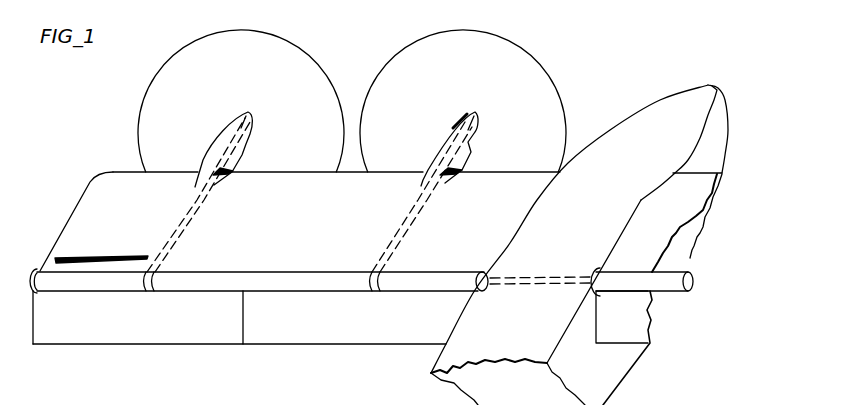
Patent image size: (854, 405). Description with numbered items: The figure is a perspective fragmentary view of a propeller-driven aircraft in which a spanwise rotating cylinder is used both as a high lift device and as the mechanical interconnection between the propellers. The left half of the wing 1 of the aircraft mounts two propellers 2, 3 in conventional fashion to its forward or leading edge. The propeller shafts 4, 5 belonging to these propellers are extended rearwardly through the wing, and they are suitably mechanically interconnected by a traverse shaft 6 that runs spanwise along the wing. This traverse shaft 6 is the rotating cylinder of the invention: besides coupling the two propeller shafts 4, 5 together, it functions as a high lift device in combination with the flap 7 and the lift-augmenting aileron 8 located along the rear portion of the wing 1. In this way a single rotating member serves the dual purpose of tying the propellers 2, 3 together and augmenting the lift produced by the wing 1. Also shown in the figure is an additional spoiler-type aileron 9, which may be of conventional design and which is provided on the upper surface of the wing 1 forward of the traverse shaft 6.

The wing 1 is at (75, 207).
The propeller 2 is at (238, 123).
The propeller 3 is at (478, 125).
The propeller shaft 4 is at (176, 214).
The propeller shaft 5 is at (412, 215).
The traverse shaft 6 is at (218, 289).
The flap 7 is at (316, 345).
The lift-augmenting aileron 8 is at (100, 345).
The spoiler-type aileron 9 is at (72, 257).